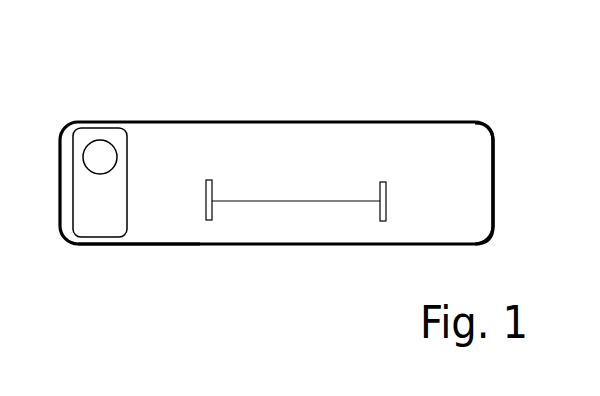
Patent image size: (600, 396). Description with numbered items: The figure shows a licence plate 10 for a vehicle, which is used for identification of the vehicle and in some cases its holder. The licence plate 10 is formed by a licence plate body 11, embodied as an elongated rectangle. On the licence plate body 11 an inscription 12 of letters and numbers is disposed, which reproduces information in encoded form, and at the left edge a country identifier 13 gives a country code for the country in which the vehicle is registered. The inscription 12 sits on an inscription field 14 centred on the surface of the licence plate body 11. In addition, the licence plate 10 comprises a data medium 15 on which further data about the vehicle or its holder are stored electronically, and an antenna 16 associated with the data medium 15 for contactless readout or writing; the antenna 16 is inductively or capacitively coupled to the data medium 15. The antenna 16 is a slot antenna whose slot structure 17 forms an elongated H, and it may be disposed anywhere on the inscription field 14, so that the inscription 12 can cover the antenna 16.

The licence plate 10 is at (373, 108).
The licence plate body 11 is at (152, 246).
The inscription 12 is at (180, 152).
The country identifier 13 is at (87, 128).
The inscription field 14 is at (440, 140).
The data medium 15 is at (297, 152).
The antenna 16 is at (383, 222).
The slot structure 17 is at (333, 204).